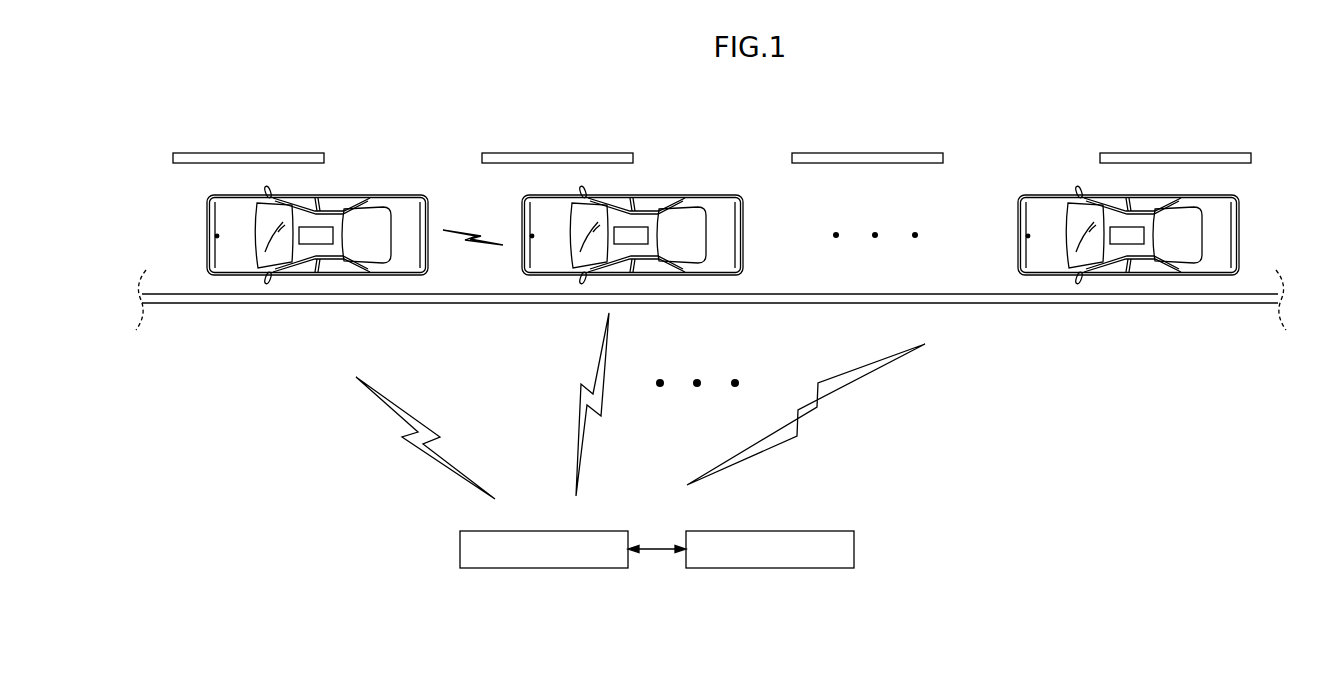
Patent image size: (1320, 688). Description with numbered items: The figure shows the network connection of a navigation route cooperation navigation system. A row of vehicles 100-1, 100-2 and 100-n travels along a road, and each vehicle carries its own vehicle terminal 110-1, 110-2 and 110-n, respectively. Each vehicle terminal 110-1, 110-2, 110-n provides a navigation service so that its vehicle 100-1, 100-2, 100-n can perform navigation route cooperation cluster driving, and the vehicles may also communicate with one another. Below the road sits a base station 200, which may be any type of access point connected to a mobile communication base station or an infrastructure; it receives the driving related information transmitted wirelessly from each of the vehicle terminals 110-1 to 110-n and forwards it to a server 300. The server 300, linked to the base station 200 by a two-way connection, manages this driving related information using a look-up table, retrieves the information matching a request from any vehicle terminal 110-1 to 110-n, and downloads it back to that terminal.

The vehicle 100-1 is at (317, 225).
The vehicle 100-2 is at (632, 225).
The vehicle 100-n is at (1128, 225).
The vehicle terminal 110-1 is at (311, 246).
The vehicle terminal 110-2 is at (637, 246).
The vehicle terminal 110-n is at (1120, 246).
The base station 200 is at (460, 551).
The server 300 is at (685, 562).